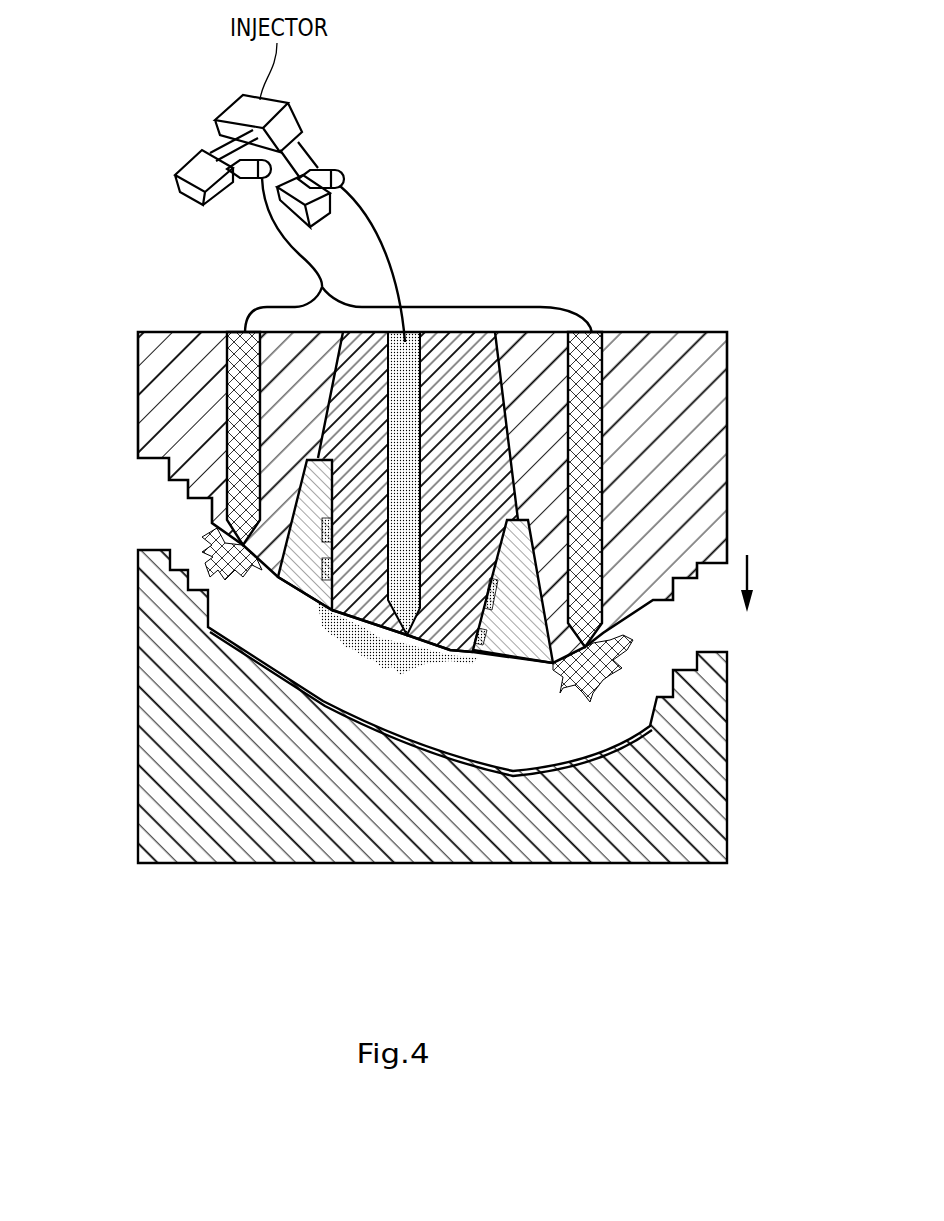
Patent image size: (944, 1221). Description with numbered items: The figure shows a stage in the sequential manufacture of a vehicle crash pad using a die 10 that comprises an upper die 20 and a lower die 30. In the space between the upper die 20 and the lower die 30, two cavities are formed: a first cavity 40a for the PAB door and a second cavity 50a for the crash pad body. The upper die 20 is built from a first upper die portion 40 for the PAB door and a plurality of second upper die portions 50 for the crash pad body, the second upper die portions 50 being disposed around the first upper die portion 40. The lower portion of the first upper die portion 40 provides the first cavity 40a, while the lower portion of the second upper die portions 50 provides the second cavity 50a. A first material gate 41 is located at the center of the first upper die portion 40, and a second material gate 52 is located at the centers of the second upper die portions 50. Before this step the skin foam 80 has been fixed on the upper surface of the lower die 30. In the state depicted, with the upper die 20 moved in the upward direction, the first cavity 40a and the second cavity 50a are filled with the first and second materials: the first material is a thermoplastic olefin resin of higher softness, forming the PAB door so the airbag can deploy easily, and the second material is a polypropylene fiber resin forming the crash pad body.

The die 10 is at (91, 326).
The upper die 20 is at (660, 212).
The lower die 30 is at (727, 806).
The first upper die portion for the PAB door 40 is at (458, 350).
The first cavity for the PAB door 40a is at (393, 679).
The first material gate 41 is at (327, 600).
The second upper die portions for the crash pad body 50 is at (192, 343).
The second cavity for the crash pad body 50a is at (212, 573).
The second material gate 52 is at (224, 482).
The skin foam 80 is at (517, 770).